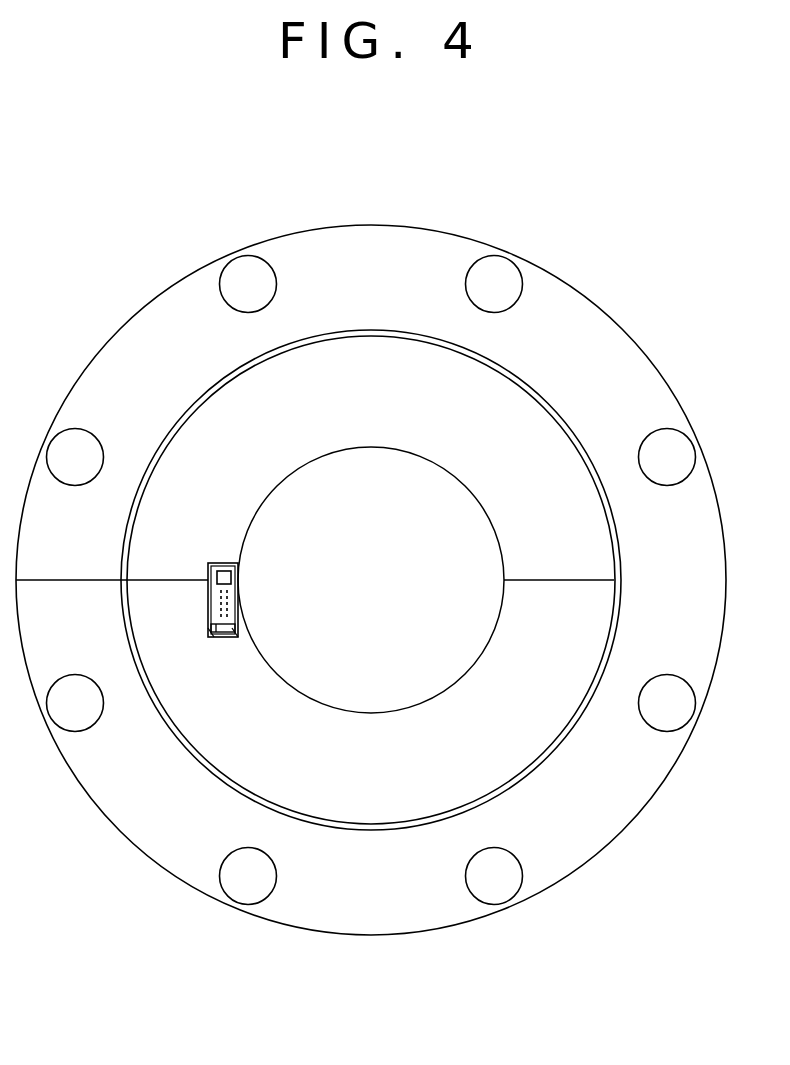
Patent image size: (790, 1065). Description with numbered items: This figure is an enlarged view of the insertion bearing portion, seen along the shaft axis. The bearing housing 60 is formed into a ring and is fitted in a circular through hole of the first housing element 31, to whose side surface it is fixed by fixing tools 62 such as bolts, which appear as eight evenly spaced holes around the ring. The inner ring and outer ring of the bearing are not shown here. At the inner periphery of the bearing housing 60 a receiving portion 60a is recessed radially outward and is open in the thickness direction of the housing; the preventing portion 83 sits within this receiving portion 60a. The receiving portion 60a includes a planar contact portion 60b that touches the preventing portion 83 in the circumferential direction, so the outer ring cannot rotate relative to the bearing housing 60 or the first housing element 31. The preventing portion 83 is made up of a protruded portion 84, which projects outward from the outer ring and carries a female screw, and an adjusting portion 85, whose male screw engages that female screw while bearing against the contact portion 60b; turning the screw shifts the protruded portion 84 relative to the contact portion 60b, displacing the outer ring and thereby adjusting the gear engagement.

The first housing element 31 is at (641, 251).
The bearing housing 60 is at (384, 258).
The fixing tool 62 is at (497, 272).
The preventing portion 83 is at (341, 563).
The protruded portion 84 is at (235, 607).
The adjusting portion 85 is at (225, 630).
The receiving portion 60a is at (237, 625).
The contact portion 60b is at (208, 628).